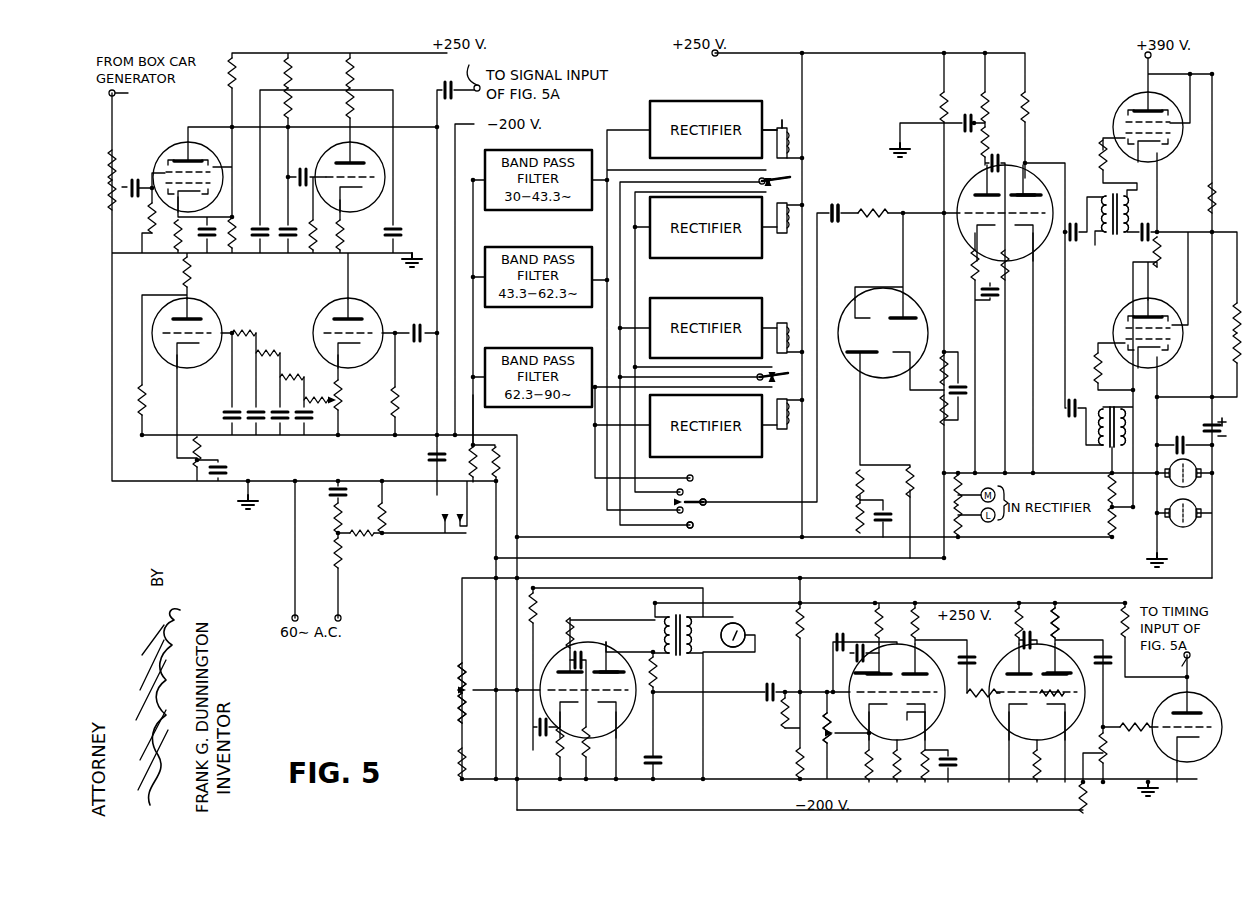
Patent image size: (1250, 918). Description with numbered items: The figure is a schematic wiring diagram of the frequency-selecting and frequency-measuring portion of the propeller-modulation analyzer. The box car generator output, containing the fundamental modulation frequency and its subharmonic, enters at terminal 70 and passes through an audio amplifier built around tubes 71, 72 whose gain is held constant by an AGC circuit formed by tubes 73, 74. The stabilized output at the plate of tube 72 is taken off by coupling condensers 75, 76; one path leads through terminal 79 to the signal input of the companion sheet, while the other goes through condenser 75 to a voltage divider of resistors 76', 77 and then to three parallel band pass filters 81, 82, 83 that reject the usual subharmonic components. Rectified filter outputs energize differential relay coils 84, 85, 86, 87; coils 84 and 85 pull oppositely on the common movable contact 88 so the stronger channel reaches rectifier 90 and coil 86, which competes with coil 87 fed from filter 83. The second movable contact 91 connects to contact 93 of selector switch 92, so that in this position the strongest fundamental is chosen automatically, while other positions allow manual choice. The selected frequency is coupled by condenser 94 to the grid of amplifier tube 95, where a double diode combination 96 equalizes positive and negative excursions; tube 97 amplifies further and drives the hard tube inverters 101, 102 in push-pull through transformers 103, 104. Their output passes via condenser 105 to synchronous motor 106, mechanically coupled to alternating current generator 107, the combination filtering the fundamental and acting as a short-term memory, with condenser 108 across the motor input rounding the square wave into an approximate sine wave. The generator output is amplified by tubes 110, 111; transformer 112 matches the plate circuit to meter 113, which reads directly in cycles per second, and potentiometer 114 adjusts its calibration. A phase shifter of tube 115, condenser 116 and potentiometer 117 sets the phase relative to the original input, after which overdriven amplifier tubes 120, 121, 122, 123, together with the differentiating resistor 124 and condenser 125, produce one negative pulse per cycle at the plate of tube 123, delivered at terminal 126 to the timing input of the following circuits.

The terminal 70 is at (128, 93).
The tube 71 is at (174, 144).
The tube 72 is at (334, 144).
The tube 73 is at (212, 305).
The tube 74 is at (372, 305).
The coupling condenser 75 is at (428, 459).
The coupling condenser 76 is at (430, 81).
The resistor 76' is at (458, 464).
The resistor 77 is at (503, 450).
The terminal 79 is at (471, 75).
The band pass filter 81 is at (543, 210).
The band pass filter 82 is at (543, 308).
The band pass filter 83 is at (543, 408).
The differential relay coil 84 is at (789, 108).
The differential relay coil 85 is at (786, 236).
The differential relay coil 86 is at (789, 319).
The differential relay coil 87 is at (786, 432).
The common movable contact 88 is at (790, 178).
The rectifier 90 is at (706, 298).
The movable contact 91 is at (788, 374).
The selector switch 92 is at (703, 498).
The contact 93 is at (694, 523).
The condenser 94 is at (838, 204).
The amplifier tube 95 is at (977, 182).
The double diode combination 96 is at (906, 298).
The tube 97 is at (1038, 172).
The hard tube inverter 101 is at (1116, 122).
The hard tube inverter 102 is at (1172, 362).
The transformer 103 is at (1119, 244).
The transformer 104 is at (1112, 450).
The condenser 105 is at (1208, 424).
The synchronous motor 106 is at (1197, 483).
The alternating current generator 107 is at (1197, 509).
The condenser 108 is at (1180, 434).
The tube 110 is at (560, 650).
The tube 111 is at (622, 724).
The transformer 112 is at (676, 656).
The meter 113 is at (740, 645).
The potentiometer 114 is at (458, 663).
The tube 115 is at (852, 706).
The condenser 116 is at (855, 670).
The potentiometer 117 is at (826, 748).
The overdriven amplifier tube 120 is at (935, 725).
The overdriven amplifier tube 121 is at (1010, 660).
The overdriven amplifier tube 122 is at (1078, 718).
The overdriven amplifier tube 123 is at (1205, 756).
The resistor 124 is at (1058, 698).
The condenser 125 is at (1048, 618).
The terminal 126 is at (1192, 664).